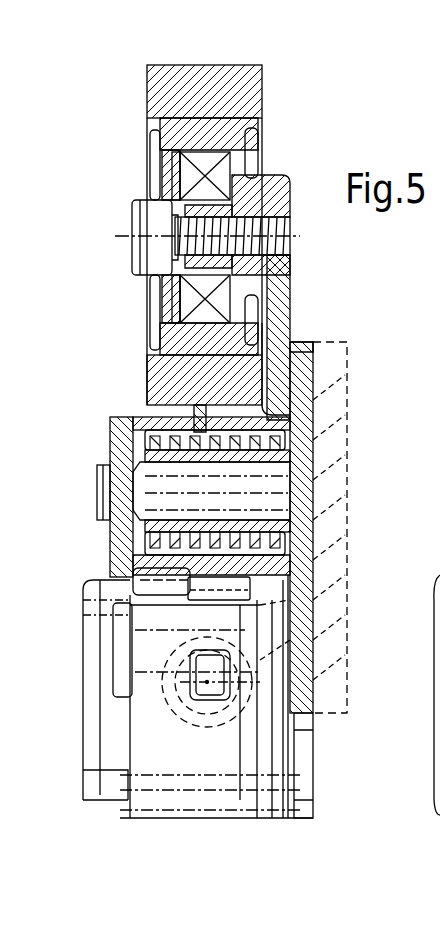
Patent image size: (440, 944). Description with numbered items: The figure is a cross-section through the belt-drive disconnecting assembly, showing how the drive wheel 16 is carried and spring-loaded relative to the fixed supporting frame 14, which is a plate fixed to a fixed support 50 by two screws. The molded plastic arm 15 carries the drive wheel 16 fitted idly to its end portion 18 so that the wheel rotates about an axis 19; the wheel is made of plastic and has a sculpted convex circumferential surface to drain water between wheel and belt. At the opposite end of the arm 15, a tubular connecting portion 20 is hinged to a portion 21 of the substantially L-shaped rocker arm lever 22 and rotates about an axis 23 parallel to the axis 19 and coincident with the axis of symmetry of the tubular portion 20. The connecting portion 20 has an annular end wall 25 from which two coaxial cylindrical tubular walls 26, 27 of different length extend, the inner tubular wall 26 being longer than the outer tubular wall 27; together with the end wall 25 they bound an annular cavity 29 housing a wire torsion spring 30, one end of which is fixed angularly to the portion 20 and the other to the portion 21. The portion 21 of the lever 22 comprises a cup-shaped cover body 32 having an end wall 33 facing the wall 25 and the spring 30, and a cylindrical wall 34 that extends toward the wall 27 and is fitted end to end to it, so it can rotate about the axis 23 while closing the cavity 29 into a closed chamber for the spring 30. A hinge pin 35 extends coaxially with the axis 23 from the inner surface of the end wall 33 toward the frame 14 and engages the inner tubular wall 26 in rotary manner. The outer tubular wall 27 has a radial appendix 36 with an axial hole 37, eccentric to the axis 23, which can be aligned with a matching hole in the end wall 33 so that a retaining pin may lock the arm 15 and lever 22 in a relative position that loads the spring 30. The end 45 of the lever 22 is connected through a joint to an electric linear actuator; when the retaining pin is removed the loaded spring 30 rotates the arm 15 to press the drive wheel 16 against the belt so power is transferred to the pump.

The drive wheel 16 is at (262, 97).
The axis 19 is at (292, 240).
The end portion 18 is at (282, 292).
The arm 15 is at (282, 322).
The cylindrical wall 34 is at (150, 427).
The wire torsion spring 30 is at (165, 475).
The cup-shaped cover body 32 is at (130, 415).
The portion of rocker arm lever 21 is at (110, 430).
The hinge pin 35 is at (100, 478).
The end wall 33 is at (115, 540).
The outer tubular wall 27 is at (317, 380).
The fixed supporting frame 14 is at (313, 400).
The annular end wall 25 is at (320, 430).
The annular cavity 29 is at (320, 448).
The axis 23 is at (315, 480).
The inner tubular wall 26 is at (290, 522).
The axial hole 37 is at (252, 578).
The tubular connecting portion 20 is at (313, 614).
The radial appendix 36 is at (290, 625).
The fixed support 50 is at (313, 713).
The end of lever 45 is at (155, 688).
The rocker arm lever 22 is at (152, 700).